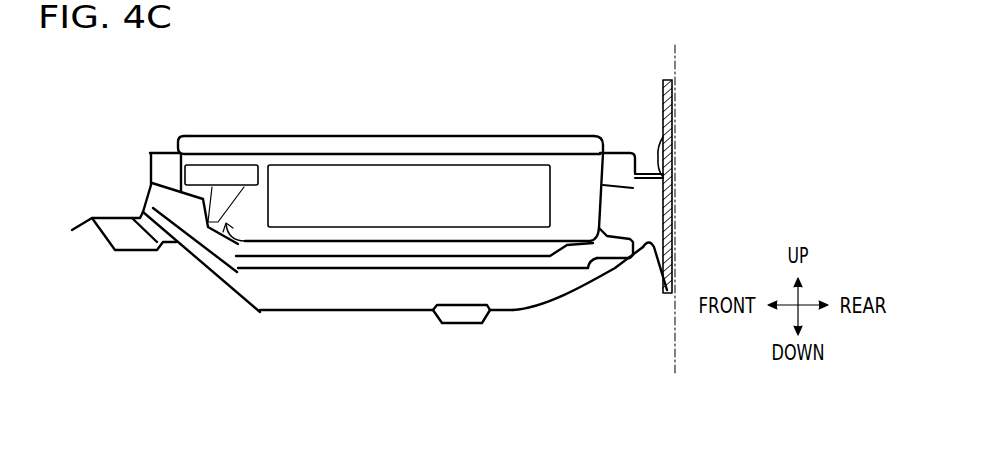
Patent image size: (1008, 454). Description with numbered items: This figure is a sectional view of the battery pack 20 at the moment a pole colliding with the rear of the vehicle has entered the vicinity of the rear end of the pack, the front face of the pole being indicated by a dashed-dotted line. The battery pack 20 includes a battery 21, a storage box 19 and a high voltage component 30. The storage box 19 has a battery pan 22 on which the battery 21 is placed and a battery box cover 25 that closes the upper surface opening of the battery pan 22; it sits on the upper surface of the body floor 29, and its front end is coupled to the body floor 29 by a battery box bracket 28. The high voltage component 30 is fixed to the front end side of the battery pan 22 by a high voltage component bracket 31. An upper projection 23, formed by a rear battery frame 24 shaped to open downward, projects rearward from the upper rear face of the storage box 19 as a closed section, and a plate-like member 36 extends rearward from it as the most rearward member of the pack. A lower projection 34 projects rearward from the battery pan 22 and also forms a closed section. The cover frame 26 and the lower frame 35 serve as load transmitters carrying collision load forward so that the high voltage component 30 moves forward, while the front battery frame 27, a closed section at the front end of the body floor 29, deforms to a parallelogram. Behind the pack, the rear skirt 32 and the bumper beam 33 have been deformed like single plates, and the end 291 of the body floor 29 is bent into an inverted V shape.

The storage box 19 is at (327, 130).
The battery pack 20 is at (378, 98).
The battery 21 is at (420, 162).
The battery pan 22 is at (540, 270).
The upper projection 23 is at (604, 186).
The rear battery frame 24 is at (618, 152).
The battery box cover 25 is at (471, 135).
The cover frame 26 is at (538, 152).
The front battery frame 27 is at (150, 157).
The battery box bracket 28 is at (120, 216).
The body floor 29 is at (360, 312).
The high voltage component 30 is at (222, 163).
The high voltage component bracket 31 is at (243, 293).
The rear skirt 32 is at (665, 88).
The bumper beam 33 is at (668, 293).
The lower projection 34 is at (615, 231).
The lower frame 35 is at (435, 312).
The plate-like member 36 is at (645, 168).
The end of the body floor 291 is at (643, 283).